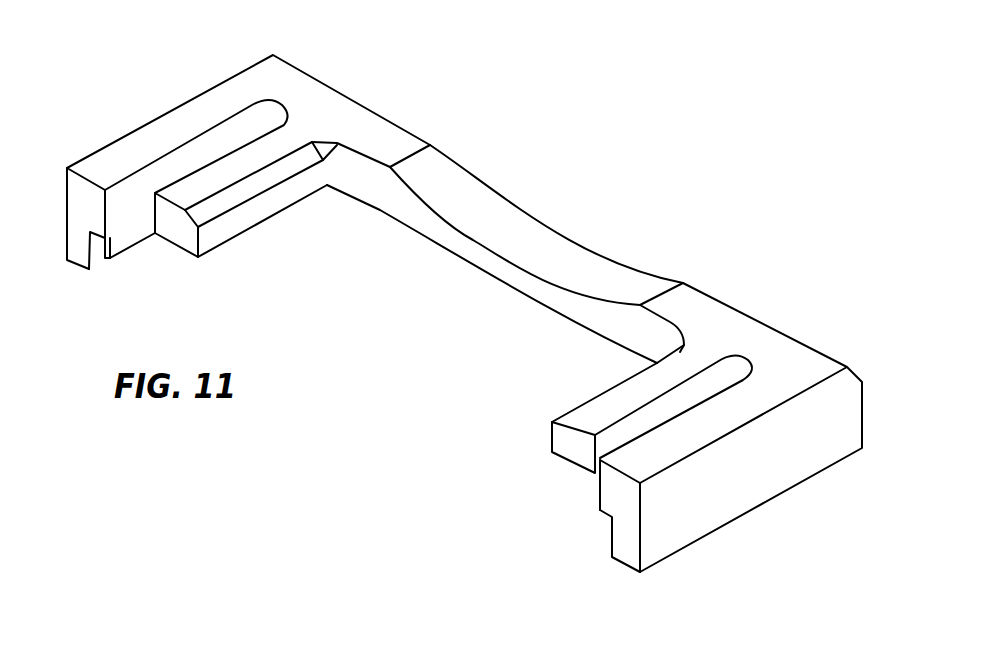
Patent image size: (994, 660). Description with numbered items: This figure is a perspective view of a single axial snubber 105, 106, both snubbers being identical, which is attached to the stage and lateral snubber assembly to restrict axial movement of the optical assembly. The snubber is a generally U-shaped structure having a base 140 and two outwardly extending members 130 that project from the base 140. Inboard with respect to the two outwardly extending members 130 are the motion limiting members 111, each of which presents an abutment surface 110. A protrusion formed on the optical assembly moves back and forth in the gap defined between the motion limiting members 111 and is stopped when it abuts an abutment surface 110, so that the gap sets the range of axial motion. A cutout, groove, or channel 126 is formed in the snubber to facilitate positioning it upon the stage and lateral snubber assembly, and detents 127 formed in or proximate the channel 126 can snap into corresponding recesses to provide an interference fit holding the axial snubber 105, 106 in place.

The axial snubber 105 is at (445, 327).
The axial snubber 106 is at (586, 151).
The abutment surface 110 is at (177, 228).
The motion limiting member 111 is at (262, 209).
The channel 126 is at (122, 244).
The detent 127 is at (95, 270).
The outwardly extending member 130 is at (136, 137).
The base 140 is at (440, 168).